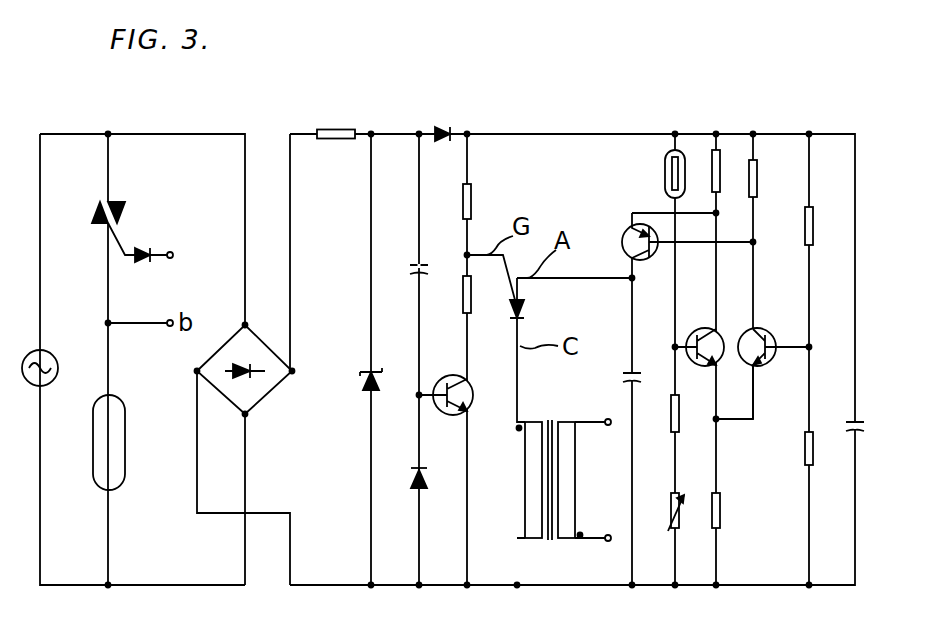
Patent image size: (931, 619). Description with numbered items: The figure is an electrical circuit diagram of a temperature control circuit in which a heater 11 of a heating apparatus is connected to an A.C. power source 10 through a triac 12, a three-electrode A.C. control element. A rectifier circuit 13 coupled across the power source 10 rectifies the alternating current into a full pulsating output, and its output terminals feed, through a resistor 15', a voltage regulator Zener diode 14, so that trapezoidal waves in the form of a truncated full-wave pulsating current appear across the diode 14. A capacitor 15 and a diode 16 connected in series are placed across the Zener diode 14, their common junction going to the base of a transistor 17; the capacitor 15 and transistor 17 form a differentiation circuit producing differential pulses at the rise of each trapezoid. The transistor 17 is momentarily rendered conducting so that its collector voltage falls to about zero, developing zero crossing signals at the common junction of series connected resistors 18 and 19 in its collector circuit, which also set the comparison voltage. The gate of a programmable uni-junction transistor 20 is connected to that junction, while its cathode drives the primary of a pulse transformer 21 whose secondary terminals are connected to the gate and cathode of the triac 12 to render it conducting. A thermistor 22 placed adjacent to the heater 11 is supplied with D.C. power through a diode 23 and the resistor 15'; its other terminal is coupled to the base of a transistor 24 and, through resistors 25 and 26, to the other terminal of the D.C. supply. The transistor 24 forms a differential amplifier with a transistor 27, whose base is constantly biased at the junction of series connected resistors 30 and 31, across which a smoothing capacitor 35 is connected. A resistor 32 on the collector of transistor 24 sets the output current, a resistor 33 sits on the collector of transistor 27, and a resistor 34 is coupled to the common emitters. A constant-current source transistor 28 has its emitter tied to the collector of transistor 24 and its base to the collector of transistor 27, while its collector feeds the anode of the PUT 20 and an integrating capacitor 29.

The A.C. power source 10 is at (52, 352).
The heater 11 is at (126, 418).
The triac 12 is at (120, 203).
The rectifier circuit 13 is at (264, 333).
The Zener diode 14 is at (376, 372).
The capacitor 15 is at (401, 244).
The resistor 15' is at (343, 103).
The diode 16 is at (424, 480).
The transistor 17 is at (473, 405).
The resistor 18 is at (472, 201).
The resistor 19 is at (472, 300).
The programmable uni-junction transistor 20 is at (525, 312).
The pulse transformer 21 is at (540, 422).
The thermistor 22 is at (665, 165).
The diode 23 is at (443, 127).
The transistor 24 is at (713, 330).
The resistor 25 is at (680, 413).
The resistor 26 is at (680, 492).
The transistor 27 is at (768, 364).
The constant-current source transistor 28 is at (645, 262).
The integrating capacitor 29 is at (640, 383).
The resistor 30 is at (813, 212).
The resistor 31 is at (813, 450).
The resistor 32 is at (720, 170).
The resistor 33 is at (757, 172).
The resistor 34 is at (720, 502).
The smoothing capacitor 35 is at (862, 431).